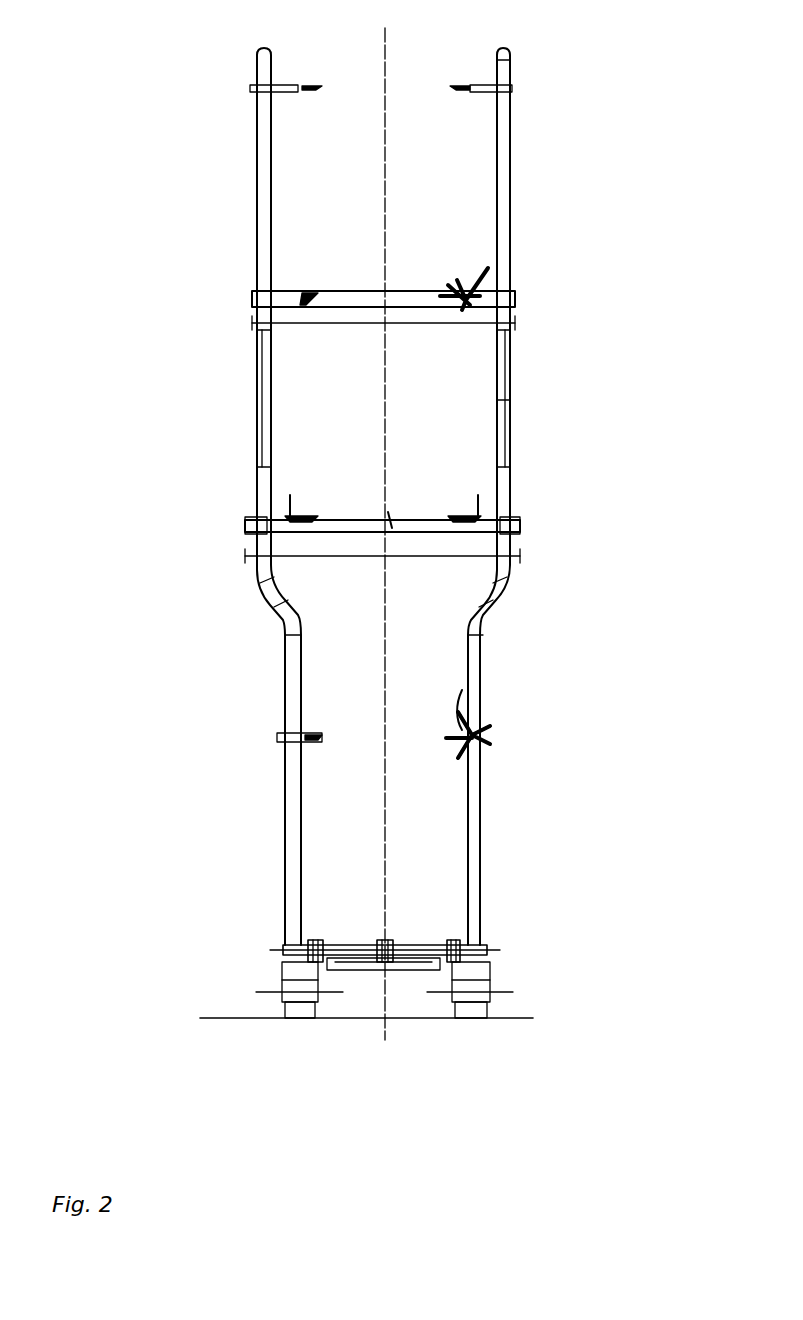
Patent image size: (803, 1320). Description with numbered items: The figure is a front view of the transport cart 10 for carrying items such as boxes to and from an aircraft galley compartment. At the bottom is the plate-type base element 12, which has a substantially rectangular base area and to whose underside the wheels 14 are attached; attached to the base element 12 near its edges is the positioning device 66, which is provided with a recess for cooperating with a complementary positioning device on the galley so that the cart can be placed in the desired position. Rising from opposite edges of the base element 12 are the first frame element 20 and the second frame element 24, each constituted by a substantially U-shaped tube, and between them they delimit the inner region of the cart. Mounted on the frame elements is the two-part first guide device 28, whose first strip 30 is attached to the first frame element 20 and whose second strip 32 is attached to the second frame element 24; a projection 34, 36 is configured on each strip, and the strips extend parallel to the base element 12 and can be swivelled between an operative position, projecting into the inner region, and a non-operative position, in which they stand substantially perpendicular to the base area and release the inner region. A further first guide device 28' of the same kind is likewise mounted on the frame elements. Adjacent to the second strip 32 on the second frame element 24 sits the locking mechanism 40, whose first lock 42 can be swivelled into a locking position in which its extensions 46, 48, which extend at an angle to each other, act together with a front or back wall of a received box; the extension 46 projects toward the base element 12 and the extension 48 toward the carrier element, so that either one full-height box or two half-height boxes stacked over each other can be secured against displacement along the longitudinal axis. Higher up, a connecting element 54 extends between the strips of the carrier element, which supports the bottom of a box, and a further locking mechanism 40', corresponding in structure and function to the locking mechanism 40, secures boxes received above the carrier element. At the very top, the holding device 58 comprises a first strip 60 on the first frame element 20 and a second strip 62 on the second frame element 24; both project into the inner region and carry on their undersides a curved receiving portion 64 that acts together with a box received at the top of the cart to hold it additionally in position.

The transport cart 10 is at (592, 294).
The base element 12 is at (410, 946).
The wheels 14 is at (298, 1020).
The first frame element 20 is at (285, 688).
The second frame element 24 is at (481, 686).
The first guide device 28 is at (542, 555).
The first guide device 28' is at (424, 516).
The first strip 30 is at (303, 733).
The second strip 32 is at (458, 728).
The projection 34 is at (322, 738).
The projection 36 is at (455, 738).
The locking mechanism 40 is at (497, 763).
The further locking mechanism 40' is at (519, 247).
The first lock 42 is at (486, 730).
The extension 46 is at (462, 760).
The extension 48 is at (470, 680).
The connecting element 54 is at (392, 514).
The holding device 58 is at (520, 80).
The first strip 60 is at (284, 85).
The second strip 62 is at (470, 85).
The receiving portion 64 is at (305, 92).
The positioning device 66 is at (408, 970).